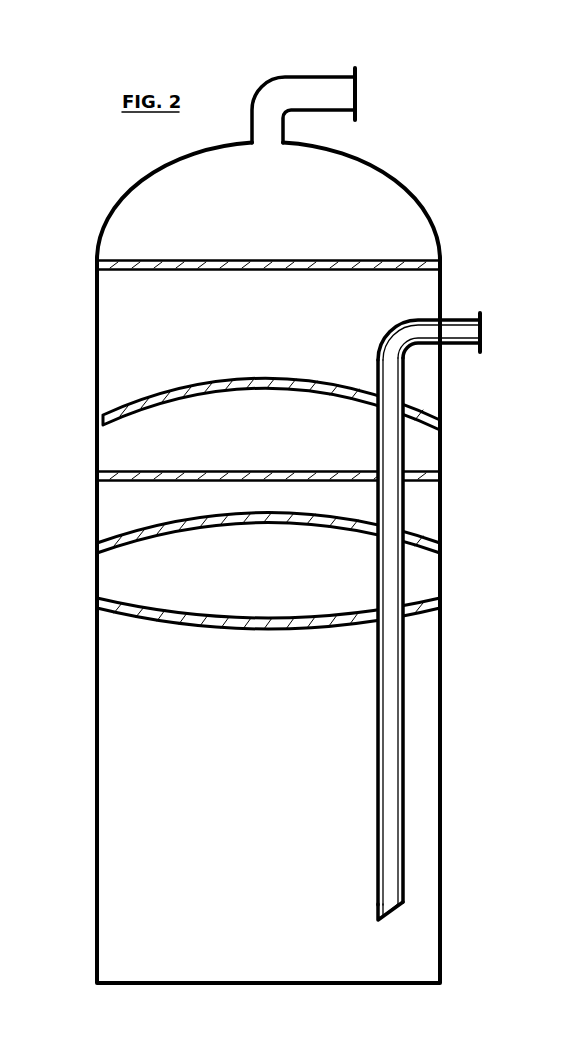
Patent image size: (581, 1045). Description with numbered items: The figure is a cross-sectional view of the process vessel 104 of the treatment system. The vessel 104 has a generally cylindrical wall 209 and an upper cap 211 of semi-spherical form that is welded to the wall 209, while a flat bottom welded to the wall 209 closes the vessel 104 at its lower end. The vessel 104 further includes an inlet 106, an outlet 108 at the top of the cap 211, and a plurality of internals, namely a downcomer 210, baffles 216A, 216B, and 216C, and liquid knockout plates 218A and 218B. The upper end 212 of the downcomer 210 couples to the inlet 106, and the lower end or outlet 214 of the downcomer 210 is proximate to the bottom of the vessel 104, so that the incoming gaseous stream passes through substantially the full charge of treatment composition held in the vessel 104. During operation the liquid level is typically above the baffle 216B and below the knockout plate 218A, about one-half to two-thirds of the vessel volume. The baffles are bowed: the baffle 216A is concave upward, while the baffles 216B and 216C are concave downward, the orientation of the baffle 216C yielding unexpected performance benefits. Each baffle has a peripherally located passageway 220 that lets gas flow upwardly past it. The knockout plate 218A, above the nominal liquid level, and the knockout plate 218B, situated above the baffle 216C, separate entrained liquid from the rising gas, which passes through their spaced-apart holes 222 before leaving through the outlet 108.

The vessel 104 is at (452, 161).
The inlet 106 is at (457, 320).
The outlet 108 is at (329, 104).
The cylindrical wall 209 is at (95, 720).
The downcomer 210 is at (390, 578).
The upper cap 211 is at (127, 192).
The upper end of downcomer 212 is at (392, 373).
The lower end of downcomer 214 is at (407, 885).
The baffle 216A is at (410, 612).
The baffle 216B is at (420, 537).
The baffle 216C is at (418, 408).
The liquid knockout plate 218A is at (423, 471).
The liquid knockout plate 218B is at (397, 258).
The passageway 220 is at (100, 412).
The holes 222 is at (168, 260).